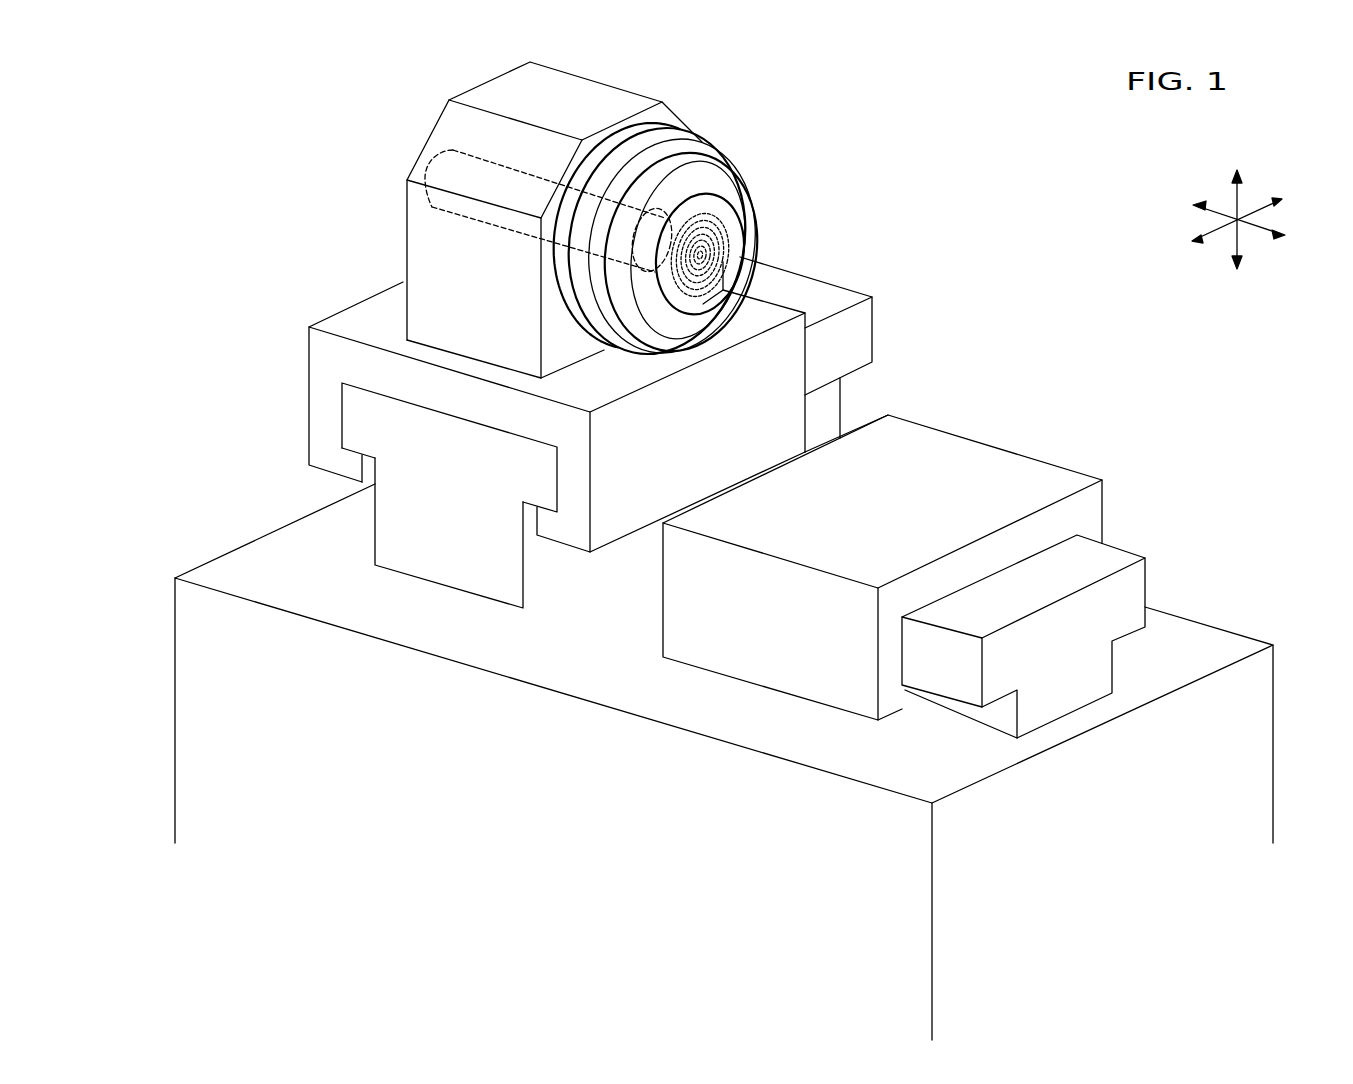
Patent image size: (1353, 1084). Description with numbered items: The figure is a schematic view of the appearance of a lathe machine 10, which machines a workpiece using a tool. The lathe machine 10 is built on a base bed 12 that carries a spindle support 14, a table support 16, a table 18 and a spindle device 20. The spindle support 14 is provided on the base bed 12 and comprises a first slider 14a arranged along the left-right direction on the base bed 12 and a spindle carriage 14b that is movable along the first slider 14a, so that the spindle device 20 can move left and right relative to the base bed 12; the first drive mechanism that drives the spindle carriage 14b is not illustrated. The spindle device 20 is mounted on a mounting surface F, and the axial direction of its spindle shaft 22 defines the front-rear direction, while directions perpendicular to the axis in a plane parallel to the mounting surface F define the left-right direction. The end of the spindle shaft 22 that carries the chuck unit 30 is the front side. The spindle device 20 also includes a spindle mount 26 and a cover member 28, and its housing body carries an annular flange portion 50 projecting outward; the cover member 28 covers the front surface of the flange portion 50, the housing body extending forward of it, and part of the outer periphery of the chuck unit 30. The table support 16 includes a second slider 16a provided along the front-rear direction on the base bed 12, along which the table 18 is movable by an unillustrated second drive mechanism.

The lathe machine 10 is at (264, 161).
The base bed 12 is at (175, 685).
The spindle support 14 is at (532, 486).
The first slider 14a is at (455, 548).
The spindle carriage 14b is at (326, 358).
The table support 16 is at (952, 600).
The second slider 16a is at (1140, 592).
The table 18 is at (722, 647).
The spindle device 20 is at (584, 206).
The spindle shaft 22 is at (484, 157).
The spindle mount 26 is at (432, 238).
The cover member 28 is at (663, 168).
The chuck unit 30 is at (728, 234).
The flange portion 50 is at (611, 145).
The mounting surface F is at (366, 321).